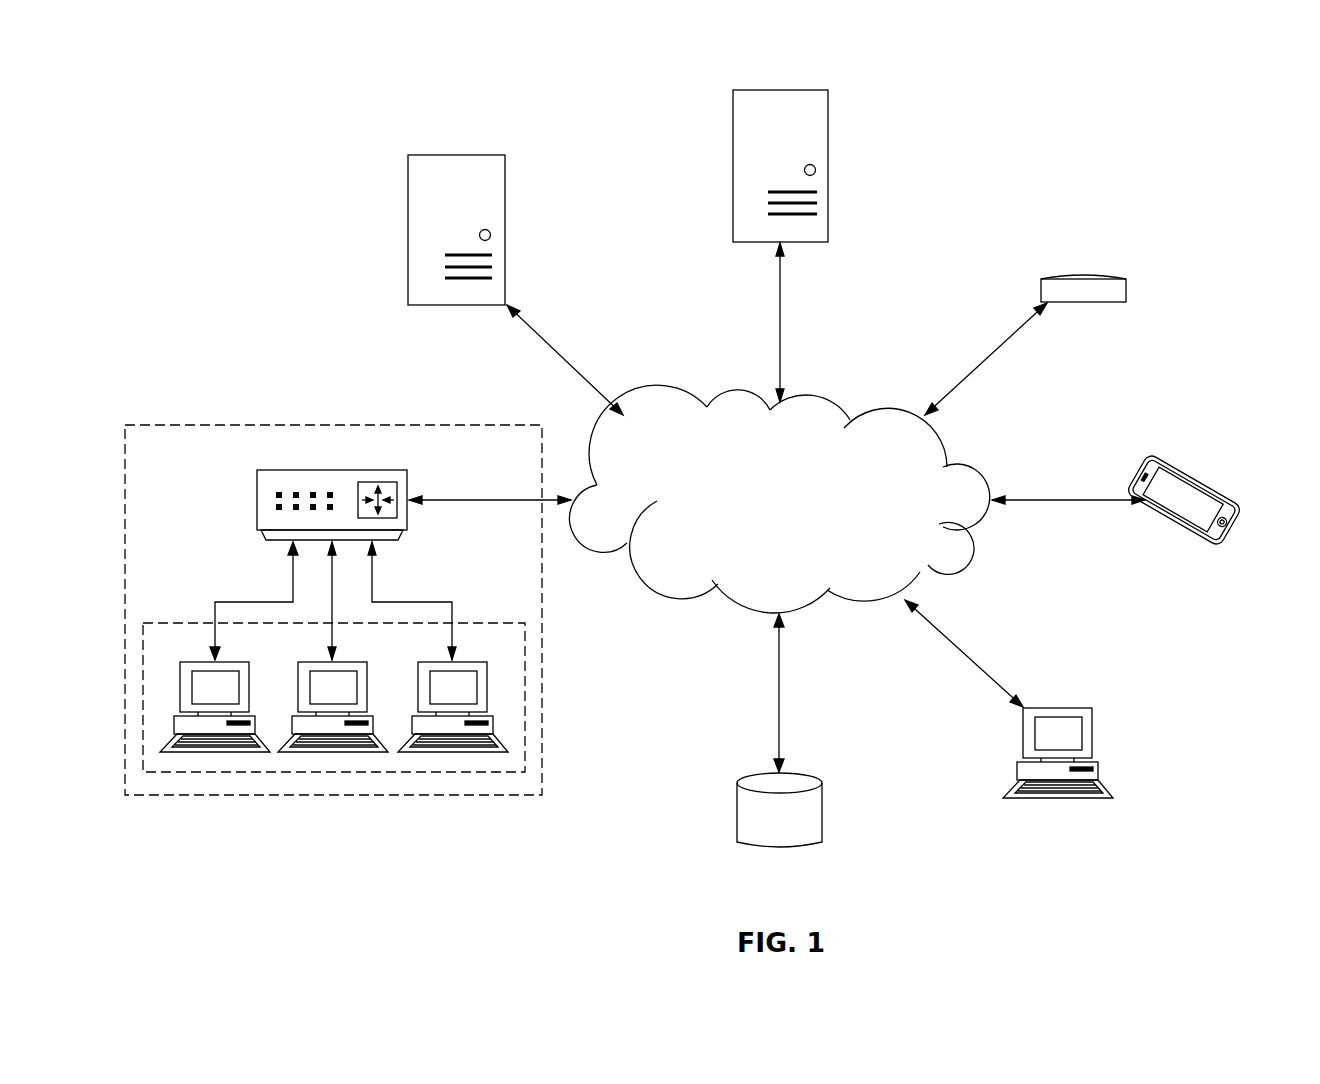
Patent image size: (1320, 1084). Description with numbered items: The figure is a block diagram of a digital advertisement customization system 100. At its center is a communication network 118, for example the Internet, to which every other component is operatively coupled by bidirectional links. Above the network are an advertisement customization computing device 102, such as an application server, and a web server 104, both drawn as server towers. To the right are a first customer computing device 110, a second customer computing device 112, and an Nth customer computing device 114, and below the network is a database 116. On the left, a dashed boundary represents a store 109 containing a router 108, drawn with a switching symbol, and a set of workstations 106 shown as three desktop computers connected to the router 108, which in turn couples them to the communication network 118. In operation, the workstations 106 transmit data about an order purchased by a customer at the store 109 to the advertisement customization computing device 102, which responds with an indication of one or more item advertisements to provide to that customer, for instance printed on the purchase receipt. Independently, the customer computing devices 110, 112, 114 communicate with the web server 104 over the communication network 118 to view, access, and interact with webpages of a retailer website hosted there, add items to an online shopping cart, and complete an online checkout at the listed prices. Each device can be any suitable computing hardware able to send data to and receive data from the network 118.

The digital advertisement customization system 100 is at (1172, 75).
The advertisement customization computing device 102 is at (797, 88).
The web server 104 is at (430, 153).
The workstations 106 is at (198, 623).
The router 108 is at (282, 470).
The store 109 is at (197, 425).
The first customer computing device 110 is at (1095, 275).
The second customer computing device 112 is at (1207, 490).
The Nth customer computing device 114 is at (1080, 707).
The database 116 is at (807, 777).
The communication network 118 is at (823, 398).